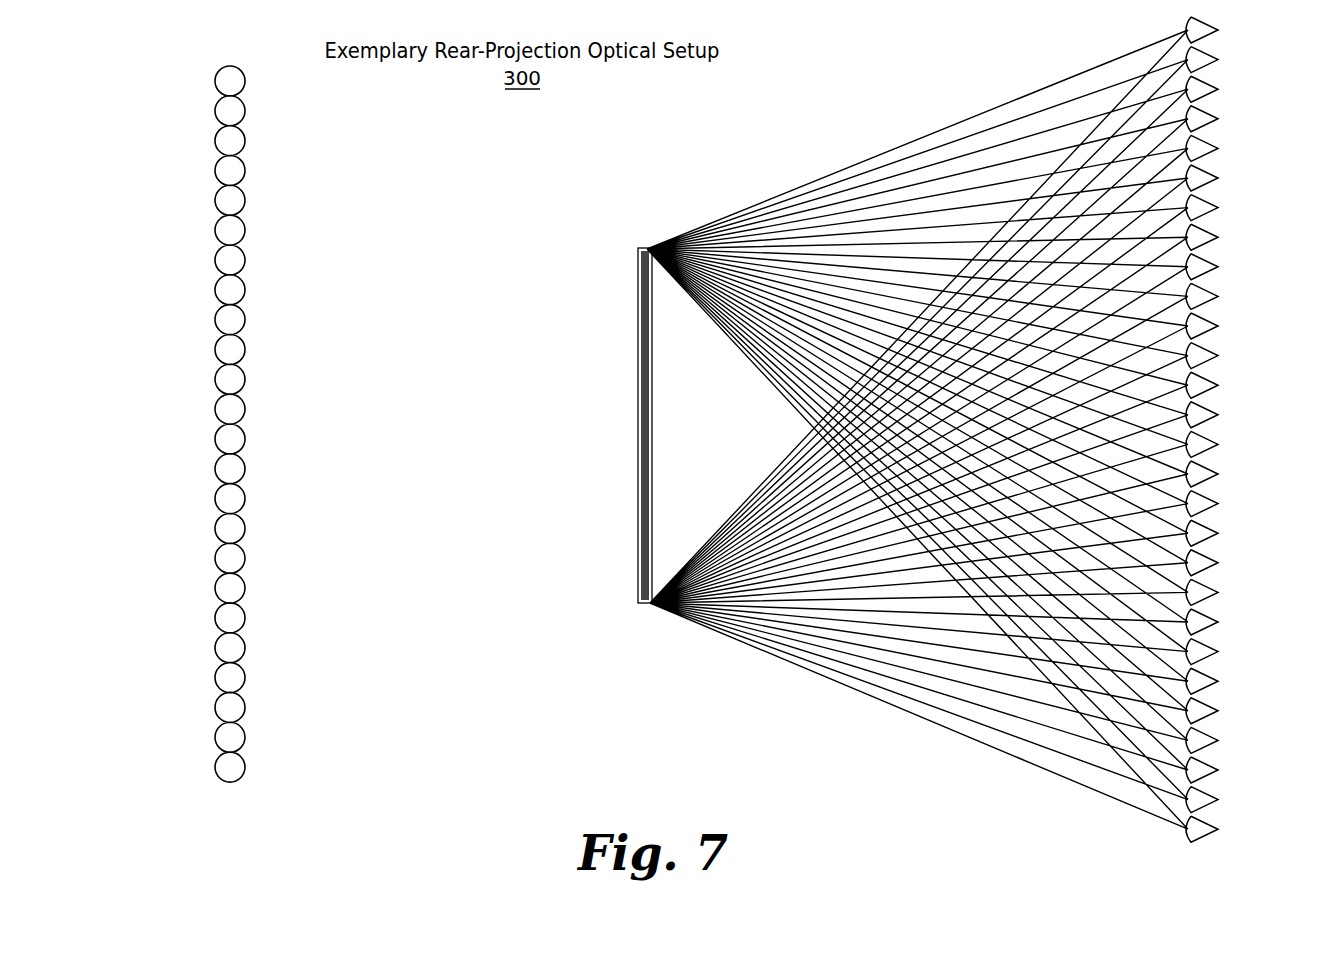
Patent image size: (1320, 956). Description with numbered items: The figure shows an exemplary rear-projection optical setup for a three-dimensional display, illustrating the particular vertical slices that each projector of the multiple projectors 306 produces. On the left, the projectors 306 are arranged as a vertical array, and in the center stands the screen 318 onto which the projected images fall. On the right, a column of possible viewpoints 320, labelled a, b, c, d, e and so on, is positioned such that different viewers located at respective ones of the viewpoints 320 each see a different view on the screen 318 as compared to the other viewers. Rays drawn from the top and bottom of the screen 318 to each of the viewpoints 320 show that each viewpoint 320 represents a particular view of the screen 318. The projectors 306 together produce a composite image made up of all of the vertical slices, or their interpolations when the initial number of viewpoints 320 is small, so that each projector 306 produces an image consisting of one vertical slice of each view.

The projectors 306 is at (213, 75).
The screen 318 is at (638, 318).
The viewpoints 320 is at (1215, 15).